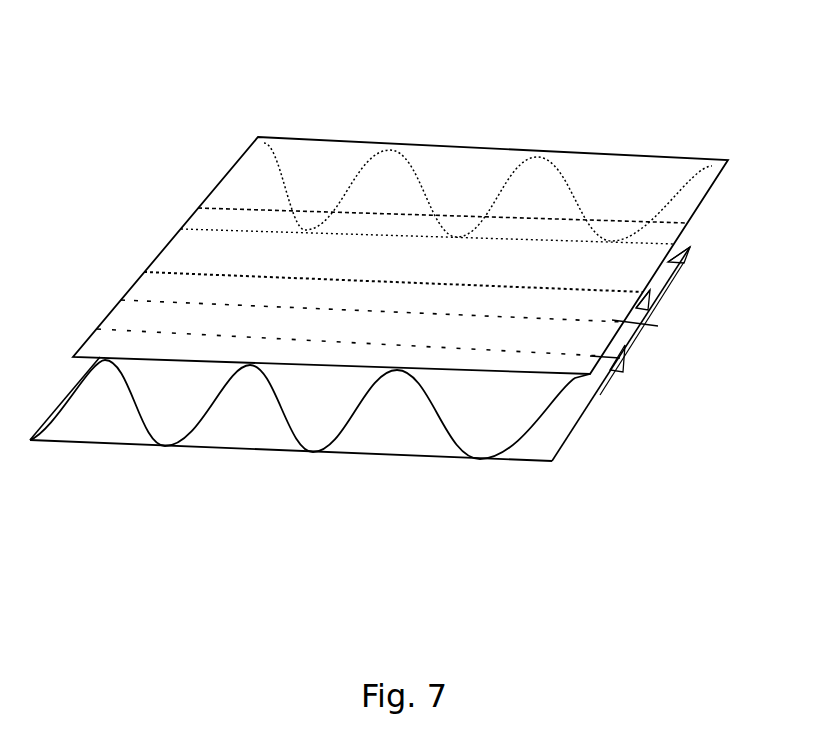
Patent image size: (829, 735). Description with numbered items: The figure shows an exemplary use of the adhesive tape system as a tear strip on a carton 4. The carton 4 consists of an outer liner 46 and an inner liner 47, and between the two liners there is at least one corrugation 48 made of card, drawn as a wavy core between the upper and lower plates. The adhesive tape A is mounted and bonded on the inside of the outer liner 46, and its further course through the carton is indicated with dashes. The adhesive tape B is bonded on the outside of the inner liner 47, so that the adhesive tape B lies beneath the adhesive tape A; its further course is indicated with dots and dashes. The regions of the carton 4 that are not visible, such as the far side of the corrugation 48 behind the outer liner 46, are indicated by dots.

The carton 4 is at (141, 167).
The outer liner 46 is at (590, 375).
The inner liner 47 is at (527, 453).
The corrugation 48 is at (343, 430).
The adhesive tape A is at (682, 261).
The adhesive tape B is at (637, 347).